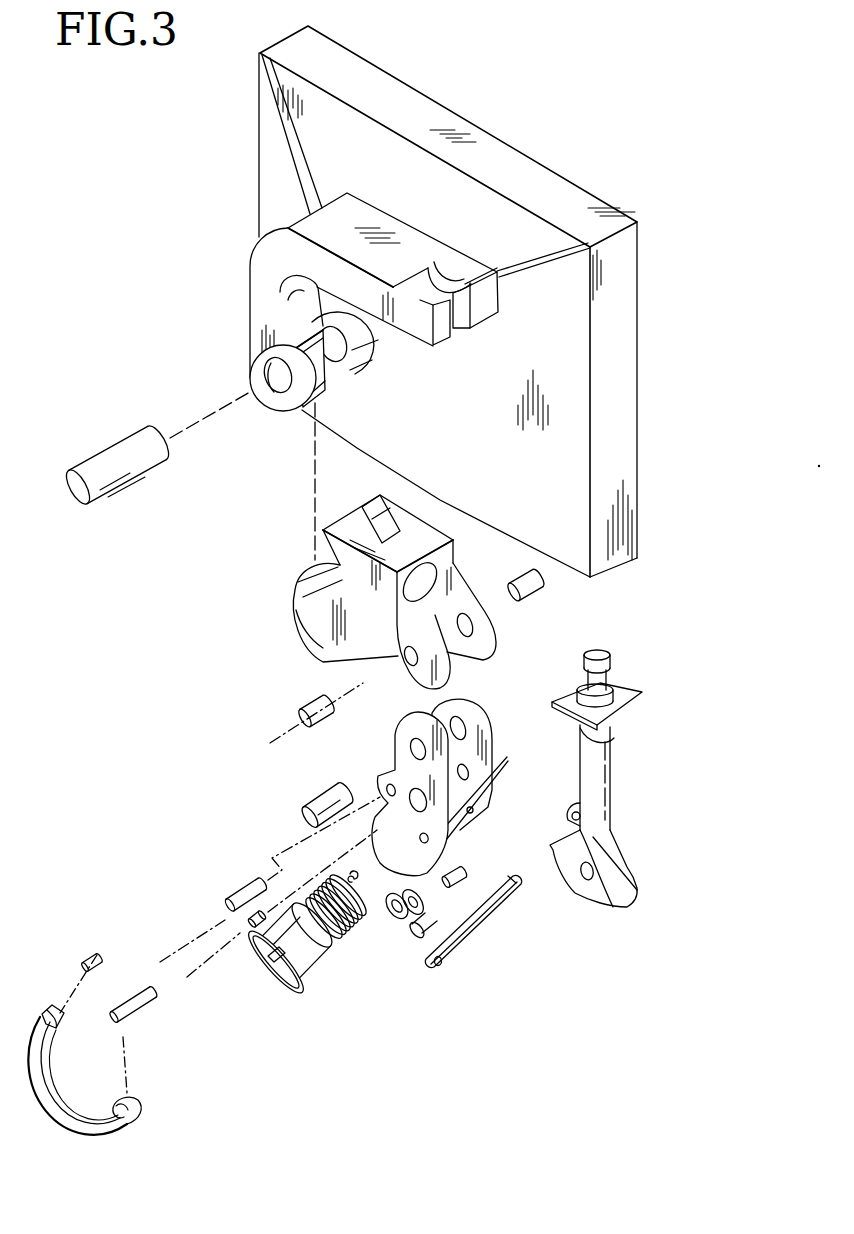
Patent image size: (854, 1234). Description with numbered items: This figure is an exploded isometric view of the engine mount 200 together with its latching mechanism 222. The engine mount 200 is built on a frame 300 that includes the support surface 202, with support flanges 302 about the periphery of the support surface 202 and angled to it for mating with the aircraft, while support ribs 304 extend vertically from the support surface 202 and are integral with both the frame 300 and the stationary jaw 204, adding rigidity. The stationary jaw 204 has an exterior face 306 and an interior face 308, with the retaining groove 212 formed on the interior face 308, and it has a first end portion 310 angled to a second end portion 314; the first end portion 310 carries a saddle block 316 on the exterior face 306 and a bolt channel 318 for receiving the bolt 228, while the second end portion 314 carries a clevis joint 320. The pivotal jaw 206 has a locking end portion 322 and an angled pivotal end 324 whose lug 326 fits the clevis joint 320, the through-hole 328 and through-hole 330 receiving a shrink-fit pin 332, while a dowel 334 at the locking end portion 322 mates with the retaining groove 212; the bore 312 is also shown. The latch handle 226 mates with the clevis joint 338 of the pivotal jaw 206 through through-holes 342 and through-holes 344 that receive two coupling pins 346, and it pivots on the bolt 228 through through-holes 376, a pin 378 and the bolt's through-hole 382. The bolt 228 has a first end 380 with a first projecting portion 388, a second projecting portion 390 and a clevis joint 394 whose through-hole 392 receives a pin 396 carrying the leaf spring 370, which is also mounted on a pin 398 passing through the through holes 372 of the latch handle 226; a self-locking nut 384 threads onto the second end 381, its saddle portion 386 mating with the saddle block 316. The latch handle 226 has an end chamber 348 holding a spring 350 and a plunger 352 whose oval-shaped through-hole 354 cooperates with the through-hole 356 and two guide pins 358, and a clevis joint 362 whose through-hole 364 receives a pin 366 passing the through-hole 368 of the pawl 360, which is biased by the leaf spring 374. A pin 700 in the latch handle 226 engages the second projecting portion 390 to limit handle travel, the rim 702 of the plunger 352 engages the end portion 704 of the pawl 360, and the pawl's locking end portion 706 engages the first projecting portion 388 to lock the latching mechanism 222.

The engine mount 200 is at (207, 205).
The support surface 202 is at (570, 380).
The stationary jaw 204 is at (353, 303).
The pivotal jaw 206 is at (391, 601).
The retaining groove 212 is at (317, 290).
The latching mechanism 222 is at (155, 752).
The latch handle 226 is at (435, 783).
The bolt 228 is at (603, 798).
The frame 300 is at (444, 301).
The support flanges 302 is at (457, 125).
The support ribs 304 is at (283, 146).
The exterior face 306 is at (377, 230).
The interior face 308 is at (288, 312).
The first end portion 310 is at (442, 242).
The front eye 312 is at (247, 370).
The second end portion 314 is at (248, 278).
The saddle block 316 is at (465, 278).
The bolt channel 318 is at (461, 332).
The clevis joint 320 is at (320, 381).
The locking end portion 322 is at (323, 530).
The pivotal end 324 is at (313, 660).
The lug 326 is at (295, 617).
The through-hole 328 is at (270, 391).
The through-hole 330 is at (312, 627).
The pin 332 is at (123, 440).
The dowel 334 is at (390, 511).
The clevis joint 338 is at (498, 640).
The through-holes 342 is at (460, 617).
The through-holes 344 is at (453, 723).
The coupling pins 346 is at (545, 598).
The end chamber 348 is at (370, 903).
The spring 350 is at (288, 975).
The plunger 352 is at (297, 1000).
The oval-shaped through-hole 354 is at (255, 975).
The through-hole 356 is at (396, 898).
The pins 358 is at (248, 925).
The pawl 360 is at (485, 962).
The clevis joint 362 is at (405, 917).
The through-hole 364 is at (422, 903).
The pin 366 is at (460, 880).
The through-hole 368 is at (444, 965).
The leaf spring 370 is at (92, 1107).
The through holes 372 is at (460, 800).
The leaf spring 374 is at (415, 940).
The through-holes 376 is at (501, 753).
The pin 378 is at (300, 812).
The first end 380 is at (636, 870).
The second end 381 is at (612, 660).
The through-hole 382 is at (584, 880).
The self-locking nut 384 is at (620, 695).
The saddle portion 386 is at (584, 733).
The first projecting portion 388 is at (627, 907).
The second projecting portion 390 is at (552, 850).
The through-hole 392 is at (572, 817).
The clevis joint 394 is at (577, 805).
The pin 396 is at (98, 953).
The pin 398 is at (152, 1003).
The pin 700 is at (233, 900).
The rim 702 is at (285, 983).
The end portion 704 is at (440, 973).
The locking end portion 706 is at (482, 930).